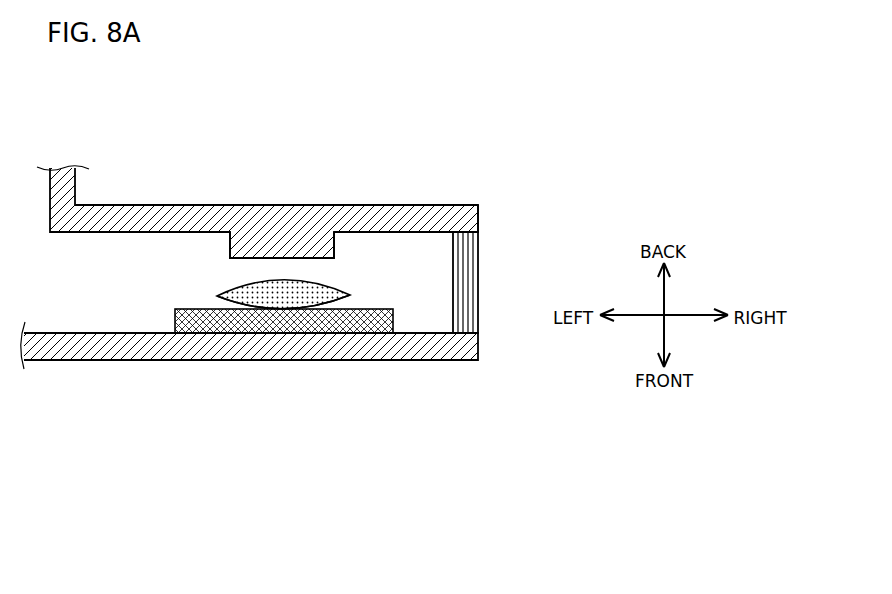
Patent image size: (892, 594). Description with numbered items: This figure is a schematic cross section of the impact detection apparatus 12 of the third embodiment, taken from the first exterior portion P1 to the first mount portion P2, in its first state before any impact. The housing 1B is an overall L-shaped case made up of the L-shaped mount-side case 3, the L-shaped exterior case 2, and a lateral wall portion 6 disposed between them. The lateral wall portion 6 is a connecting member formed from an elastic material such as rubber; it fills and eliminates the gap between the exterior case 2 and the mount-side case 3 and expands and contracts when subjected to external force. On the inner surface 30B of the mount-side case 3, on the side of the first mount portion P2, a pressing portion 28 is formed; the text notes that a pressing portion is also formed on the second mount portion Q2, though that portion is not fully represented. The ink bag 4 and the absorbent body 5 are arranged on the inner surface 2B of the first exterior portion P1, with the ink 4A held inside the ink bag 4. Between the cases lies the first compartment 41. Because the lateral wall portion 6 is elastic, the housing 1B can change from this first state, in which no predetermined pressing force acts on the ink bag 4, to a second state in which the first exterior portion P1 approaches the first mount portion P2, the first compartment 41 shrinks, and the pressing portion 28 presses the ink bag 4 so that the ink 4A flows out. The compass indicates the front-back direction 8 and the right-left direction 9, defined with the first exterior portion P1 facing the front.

The impact detection apparatus 12 is at (517, 202).
The mount-side case 3 is at (157, 152).
The second mount portion Q2 is at (75, 180).
The pressing portion 28 is at (222, 242).
The inner surface 30B is at (397, 241).
The first mount portion P2 is at (435, 205).
The housing 1B is at (467, 205).
The first compartment 41 is at (346, 253).
The exterior case 2 is at (148, 385).
The inner surface 2B is at (420, 328).
The first exterior portion P1 is at (432, 362).
The absorbent body 5 is at (198, 308).
The ink bag 4 is at (295, 280).
The ink 4A is at (313, 293).
The lateral wall portion 6 is at (477, 302).
The front-back direction 8 is at (662, 292).
The right-left direction 9 is at (692, 313).